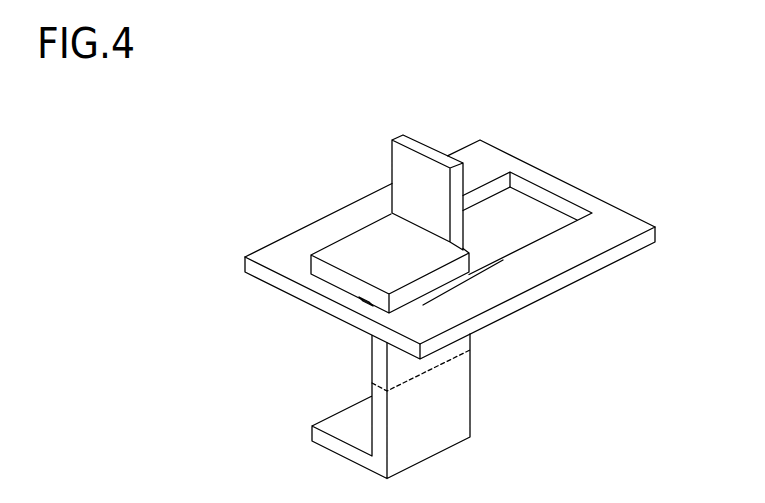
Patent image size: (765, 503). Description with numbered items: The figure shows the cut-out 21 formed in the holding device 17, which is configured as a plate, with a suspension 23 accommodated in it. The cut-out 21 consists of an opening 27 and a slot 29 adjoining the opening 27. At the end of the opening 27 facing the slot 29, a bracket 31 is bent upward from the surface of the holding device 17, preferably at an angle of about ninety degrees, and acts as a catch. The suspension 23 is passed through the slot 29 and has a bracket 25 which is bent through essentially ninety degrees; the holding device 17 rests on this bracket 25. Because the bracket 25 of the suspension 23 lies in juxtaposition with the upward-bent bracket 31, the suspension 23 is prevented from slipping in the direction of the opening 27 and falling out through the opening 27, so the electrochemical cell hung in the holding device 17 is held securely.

The holding device 17 is at (297, 243).
The cut-out 21 is at (510, 203).
The suspension 23 is at (468, 352).
The bracket 25 is at (367, 262).
The opening 27 is at (544, 212).
The slot 29 is at (372, 302).
The bracket 31 is at (404, 172).